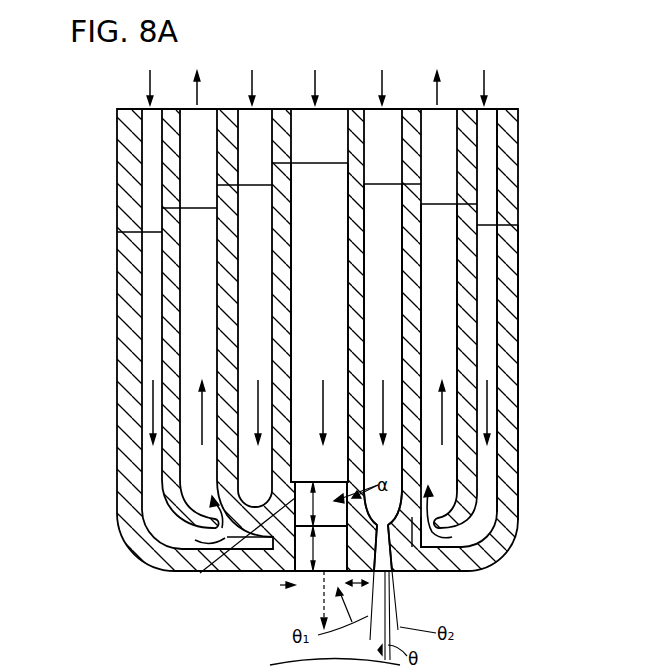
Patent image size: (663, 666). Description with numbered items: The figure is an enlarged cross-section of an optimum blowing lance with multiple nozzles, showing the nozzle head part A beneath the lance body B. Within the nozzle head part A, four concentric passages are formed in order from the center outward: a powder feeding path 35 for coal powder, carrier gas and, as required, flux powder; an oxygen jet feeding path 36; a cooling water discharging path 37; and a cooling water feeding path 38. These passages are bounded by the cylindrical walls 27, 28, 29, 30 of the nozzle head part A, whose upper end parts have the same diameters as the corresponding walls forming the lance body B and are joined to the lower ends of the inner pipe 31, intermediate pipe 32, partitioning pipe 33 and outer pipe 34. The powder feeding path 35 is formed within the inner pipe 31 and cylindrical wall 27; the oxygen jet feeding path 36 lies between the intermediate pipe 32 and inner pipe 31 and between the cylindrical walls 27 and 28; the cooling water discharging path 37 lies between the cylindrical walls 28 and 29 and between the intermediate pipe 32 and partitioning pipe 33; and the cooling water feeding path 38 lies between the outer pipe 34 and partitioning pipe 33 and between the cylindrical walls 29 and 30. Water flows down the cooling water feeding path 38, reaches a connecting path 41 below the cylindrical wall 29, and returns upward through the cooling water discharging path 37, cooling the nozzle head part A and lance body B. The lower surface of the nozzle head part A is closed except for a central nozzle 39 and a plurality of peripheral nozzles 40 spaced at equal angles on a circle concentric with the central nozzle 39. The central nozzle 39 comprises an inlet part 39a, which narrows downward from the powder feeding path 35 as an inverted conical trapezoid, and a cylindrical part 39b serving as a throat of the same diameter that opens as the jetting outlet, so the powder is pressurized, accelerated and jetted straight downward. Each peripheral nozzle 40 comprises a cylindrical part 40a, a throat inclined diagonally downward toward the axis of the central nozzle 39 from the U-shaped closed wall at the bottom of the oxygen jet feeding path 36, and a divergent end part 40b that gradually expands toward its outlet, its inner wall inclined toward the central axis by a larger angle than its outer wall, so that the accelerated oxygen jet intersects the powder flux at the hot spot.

The cylindrical wall 27 is at (347, 237).
The cylindrical wall 28 is at (404, 252).
The cylindrical wall 29 is at (460, 248).
The cylindrical wall 30 is at (516, 235).
The inner pipe 31 is at (347, 132).
The intermediate pipe 32 is at (404, 133).
The partitioning pipe 33 is at (457, 133).
The outer pipe 34 is at (516, 132).
The powder feeding path 35 is at (333, 345).
The oxygen jet feeding path 36 is at (400, 345).
The cooling water discharging path 37 is at (455, 345).
The cooling water feeding path 38 is at (482, 341).
The central nozzle 39 is at (377, 636).
The inlet part 39a is at (236, 563).
The cylindrical part 39b is at (296, 577).
The peripheral nozzle 40 is at (397, 575).
The cylindrical part 40a is at (383, 466).
The divergent end part 40b is at (420, 574).
The connecting path 41 is at (200, 572).
The nozzle head part A is at (532, 377).
The lance body B is at (537, 189).